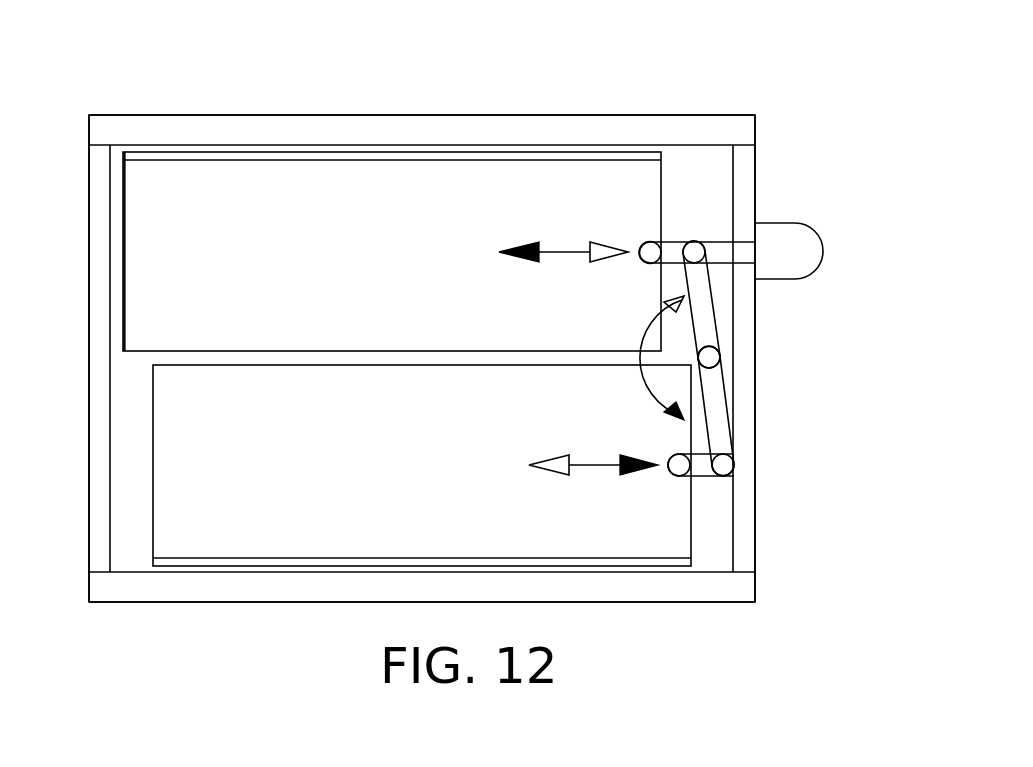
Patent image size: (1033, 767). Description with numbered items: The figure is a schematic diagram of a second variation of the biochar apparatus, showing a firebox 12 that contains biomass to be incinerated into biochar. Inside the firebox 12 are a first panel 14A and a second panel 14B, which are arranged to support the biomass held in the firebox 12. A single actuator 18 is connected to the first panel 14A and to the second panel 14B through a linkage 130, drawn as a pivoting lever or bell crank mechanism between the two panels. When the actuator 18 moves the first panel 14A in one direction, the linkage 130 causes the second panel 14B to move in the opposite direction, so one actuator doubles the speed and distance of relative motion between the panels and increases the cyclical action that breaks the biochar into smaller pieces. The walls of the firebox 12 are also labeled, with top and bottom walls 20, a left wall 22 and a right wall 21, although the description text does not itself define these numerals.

The firebox 12 is at (622, 87).
The top and bottom walls of housing 20 is at (297, 128).
The left side wall of housing 22 is at (99, 344).
The right side wall of housing 21 is at (748, 502).
The first panel 14A is at (422, 253).
The second panel 14B is at (422, 476).
The linkage 130 is at (728, 333).
The actuator 18 is at (783, 243).